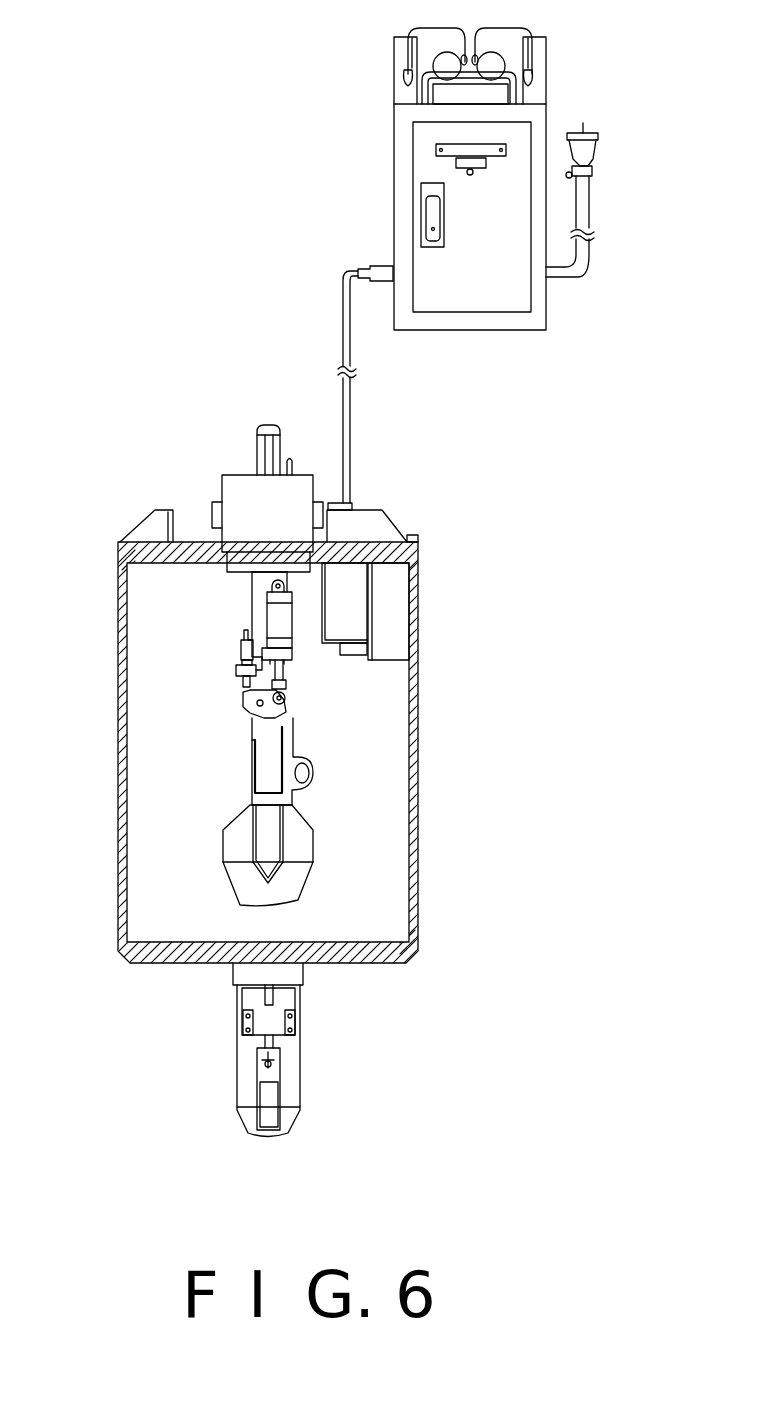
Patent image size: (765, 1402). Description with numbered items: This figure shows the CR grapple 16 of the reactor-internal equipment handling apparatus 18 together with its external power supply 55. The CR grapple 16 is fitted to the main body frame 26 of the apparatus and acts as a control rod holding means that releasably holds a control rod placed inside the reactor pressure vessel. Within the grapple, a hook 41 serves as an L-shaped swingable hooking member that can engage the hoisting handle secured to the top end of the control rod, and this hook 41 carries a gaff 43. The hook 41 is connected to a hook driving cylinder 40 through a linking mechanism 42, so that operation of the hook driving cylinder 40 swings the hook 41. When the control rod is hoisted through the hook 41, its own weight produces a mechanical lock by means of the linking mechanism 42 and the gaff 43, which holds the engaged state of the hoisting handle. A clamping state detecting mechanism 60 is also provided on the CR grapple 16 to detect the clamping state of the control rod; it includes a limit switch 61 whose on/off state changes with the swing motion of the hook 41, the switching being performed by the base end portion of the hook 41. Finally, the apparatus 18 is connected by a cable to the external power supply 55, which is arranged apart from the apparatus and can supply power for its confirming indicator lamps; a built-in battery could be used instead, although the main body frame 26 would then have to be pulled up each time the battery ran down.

The reactor-internal equipment handling apparatus 18 is at (193, 383).
The main body frame 26 is at (118, 620).
The external power supply 55 is at (428, 137).
The CR grapple 16 is at (260, 610).
The hook driving cylinder 40 is at (283, 622).
The linking mechanism 42 is at (287, 697).
The limit switch 61 is at (243, 650).
The clamping state detecting mechanism 60 is at (247, 700).
The hook 41 is at (290, 738).
The gaff 43 is at (250, 785).